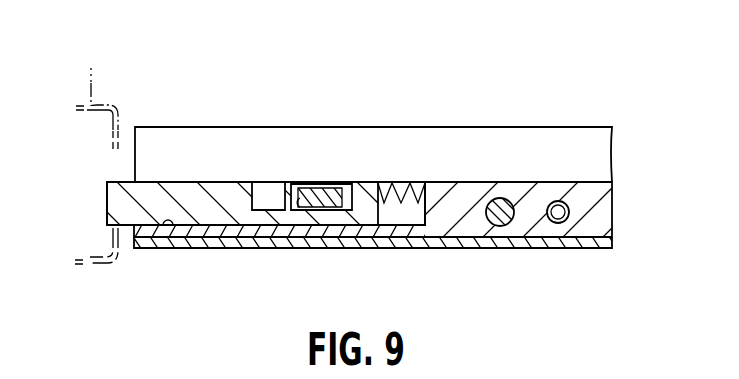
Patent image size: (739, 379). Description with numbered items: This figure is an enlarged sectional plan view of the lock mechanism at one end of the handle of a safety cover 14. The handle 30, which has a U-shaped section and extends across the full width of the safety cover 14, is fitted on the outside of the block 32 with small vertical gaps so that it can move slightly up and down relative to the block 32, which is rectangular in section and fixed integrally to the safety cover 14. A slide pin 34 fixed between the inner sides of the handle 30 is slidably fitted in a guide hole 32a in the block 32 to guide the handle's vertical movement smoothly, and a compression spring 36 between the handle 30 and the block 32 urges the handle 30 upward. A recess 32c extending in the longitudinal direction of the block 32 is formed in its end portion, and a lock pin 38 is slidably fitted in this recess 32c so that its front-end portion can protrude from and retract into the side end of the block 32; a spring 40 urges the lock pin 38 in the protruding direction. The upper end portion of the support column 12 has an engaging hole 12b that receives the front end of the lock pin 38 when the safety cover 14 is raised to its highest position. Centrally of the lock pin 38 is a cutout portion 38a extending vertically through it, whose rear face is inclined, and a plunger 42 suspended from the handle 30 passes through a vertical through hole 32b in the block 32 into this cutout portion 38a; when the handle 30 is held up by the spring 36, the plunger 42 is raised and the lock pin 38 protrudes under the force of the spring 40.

The support column 12 is at (96, 152).
The engaging hole 12b is at (106, 191).
The safety cover 14 is at (551, 128).
The handle 30 is at (428, 248).
The block 32 is at (583, 198).
The guide hole 32a is at (487, 182).
The through hole 32b is at (302, 204).
The recess 32c is at (168, 224).
The slide pin 34 is at (512, 222).
The compression spring 36 is at (568, 215).
The lock pin 38 is at (180, 193).
The cutout portion 38a is at (263, 182).
The spring 40 is at (407, 182).
The plunger 42 is at (325, 182).